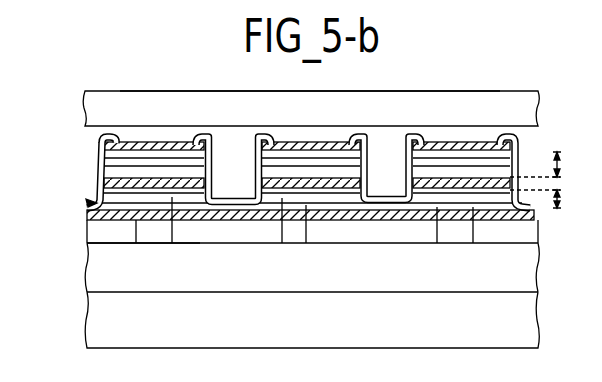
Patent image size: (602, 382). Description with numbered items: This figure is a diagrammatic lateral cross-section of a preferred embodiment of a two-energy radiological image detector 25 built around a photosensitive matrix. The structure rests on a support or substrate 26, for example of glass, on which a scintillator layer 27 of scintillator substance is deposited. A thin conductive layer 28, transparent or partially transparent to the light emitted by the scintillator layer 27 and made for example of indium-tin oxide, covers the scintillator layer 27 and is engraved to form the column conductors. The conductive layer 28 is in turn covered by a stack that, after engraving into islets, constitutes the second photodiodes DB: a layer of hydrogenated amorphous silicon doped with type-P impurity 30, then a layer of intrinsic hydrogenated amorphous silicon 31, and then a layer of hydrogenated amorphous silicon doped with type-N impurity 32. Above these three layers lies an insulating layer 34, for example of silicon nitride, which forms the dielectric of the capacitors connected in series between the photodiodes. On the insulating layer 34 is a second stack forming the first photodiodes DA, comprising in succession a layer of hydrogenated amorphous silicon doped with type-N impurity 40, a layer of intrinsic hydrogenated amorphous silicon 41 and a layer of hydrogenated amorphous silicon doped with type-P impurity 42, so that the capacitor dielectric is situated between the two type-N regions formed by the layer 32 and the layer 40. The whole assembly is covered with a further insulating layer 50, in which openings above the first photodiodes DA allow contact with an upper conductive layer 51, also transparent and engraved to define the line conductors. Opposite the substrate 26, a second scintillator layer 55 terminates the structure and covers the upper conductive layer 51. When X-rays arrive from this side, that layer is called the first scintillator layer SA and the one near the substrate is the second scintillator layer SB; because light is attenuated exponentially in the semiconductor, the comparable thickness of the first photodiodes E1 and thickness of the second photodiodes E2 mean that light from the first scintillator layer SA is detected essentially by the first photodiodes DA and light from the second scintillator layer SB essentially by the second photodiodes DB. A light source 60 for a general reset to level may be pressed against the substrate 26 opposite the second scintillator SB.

The two-energy radiological image detector 25 is at (566, 266).
The substrate 26 is at (76, 268).
The scintillator layer 27 is at (86, 228).
The thin conductive layer 28 is at (88, 214).
The layer of hydrogenated amorphous silicon doped with type-P impurity 30 is at (136, 220).
The layer of intrinsic hydrogenated amorphous silicon 31 is at (172, 243).
The layer of hydrogenated amorphous silicon doped with type-N impurity 32 is at (218, 185).
The insulating layer 34 is at (97, 190).
The layer of hydrogenated amorphous silicon doped with type-N impurity 40 is at (222, 166).
The layer of intrinsic hydrogenated amorphous silicon 41 is at (100, 172).
The layer of hydrogenated amorphous silicon doped with type-P impurity 42 is at (314, 143).
The insulating layer 50 is at (84, 208).
The upper conductive layer 51 is at (104, 138).
The second scintillator layer 55 is at (88, 104).
The light source 60 is at (85, 338).
The first scintillator layer SA is at (158, 102).
The second scintillator layer SB is at (84, 243).
The first photodiodes DA is at (534, 159).
The second photodiodes DB is at (542, 206).
The thickness of the first photodiodes E1 is at (545, 166).
The thickness of the second photodiodes E2 is at (545, 202).